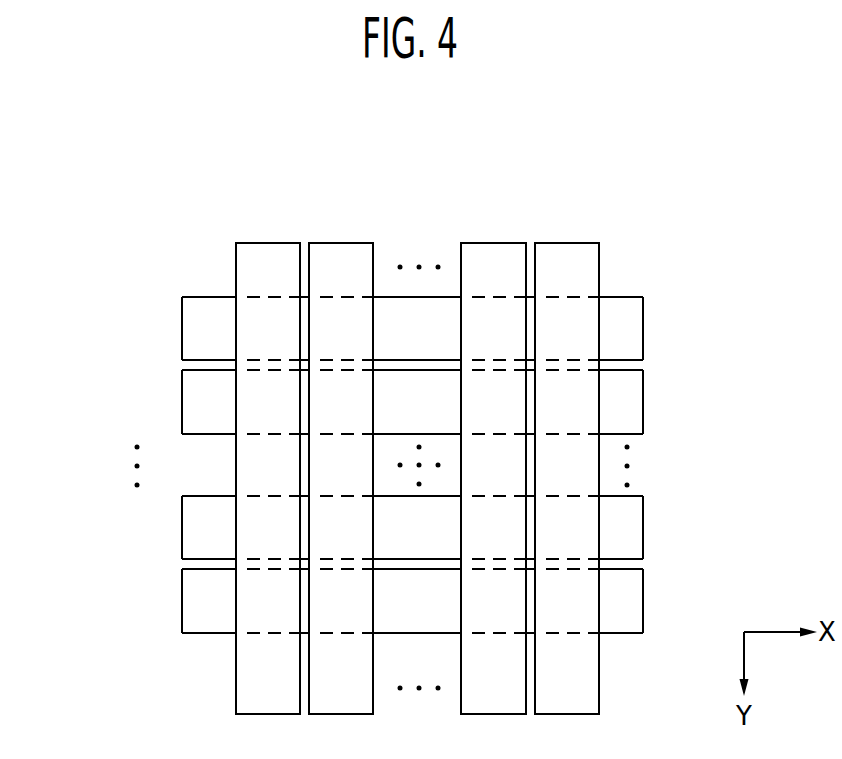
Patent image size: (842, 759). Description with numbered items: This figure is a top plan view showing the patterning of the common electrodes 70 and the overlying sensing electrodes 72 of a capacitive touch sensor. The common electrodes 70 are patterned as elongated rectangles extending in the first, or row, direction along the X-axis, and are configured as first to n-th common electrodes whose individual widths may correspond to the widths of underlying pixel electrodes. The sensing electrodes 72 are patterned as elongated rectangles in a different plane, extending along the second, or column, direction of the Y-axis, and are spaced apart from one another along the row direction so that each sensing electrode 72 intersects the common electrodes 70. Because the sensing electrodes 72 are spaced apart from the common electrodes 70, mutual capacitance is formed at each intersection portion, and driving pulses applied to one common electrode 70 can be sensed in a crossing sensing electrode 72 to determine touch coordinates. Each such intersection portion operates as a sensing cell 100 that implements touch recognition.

The common electrodes 70 is at (103, 306).
The sensing electrodes 72 is at (581, 243).
The sensing cell 100 is at (371, 421).